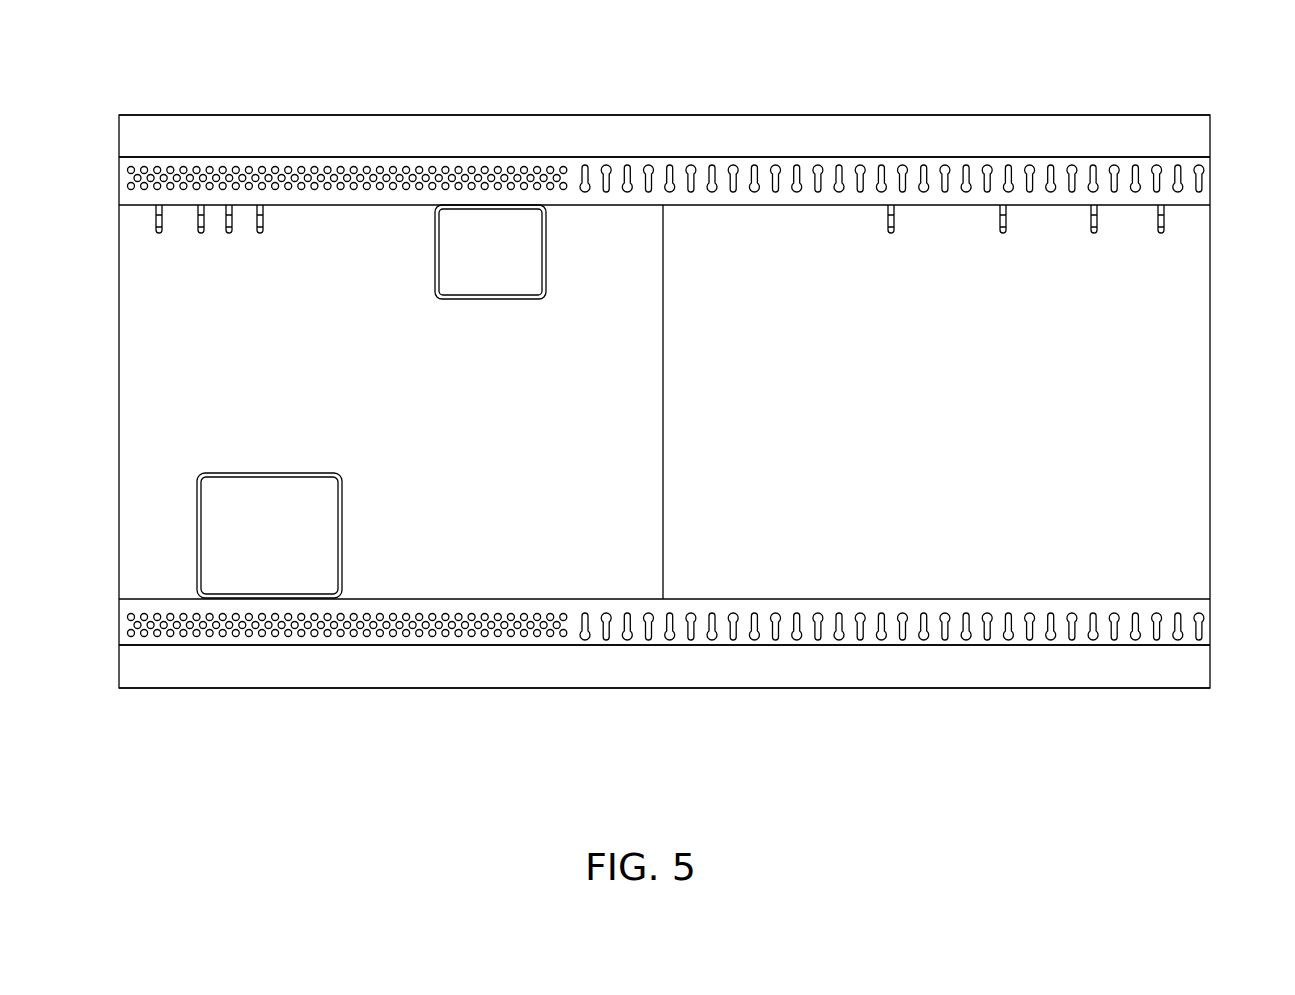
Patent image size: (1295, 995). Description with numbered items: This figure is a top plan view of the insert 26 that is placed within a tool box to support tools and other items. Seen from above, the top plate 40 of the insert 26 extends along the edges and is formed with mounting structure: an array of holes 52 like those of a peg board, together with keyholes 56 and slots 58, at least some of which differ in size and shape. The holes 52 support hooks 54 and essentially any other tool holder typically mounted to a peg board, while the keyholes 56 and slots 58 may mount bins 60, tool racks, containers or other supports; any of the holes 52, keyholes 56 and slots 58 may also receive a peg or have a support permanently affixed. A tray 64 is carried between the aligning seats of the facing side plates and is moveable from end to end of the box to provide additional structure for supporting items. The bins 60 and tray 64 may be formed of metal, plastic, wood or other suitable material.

The insert 26 is at (1220, 300).
The top plate 40 is at (1135, 150).
The holes 52 is at (351, 168).
The hooks 54 is at (229, 233).
The keyholes 56 is at (653, 168).
The slots 58 is at (1051, 165).
The bins 60 is at (503, 299).
The tray 64 is at (965, 442).